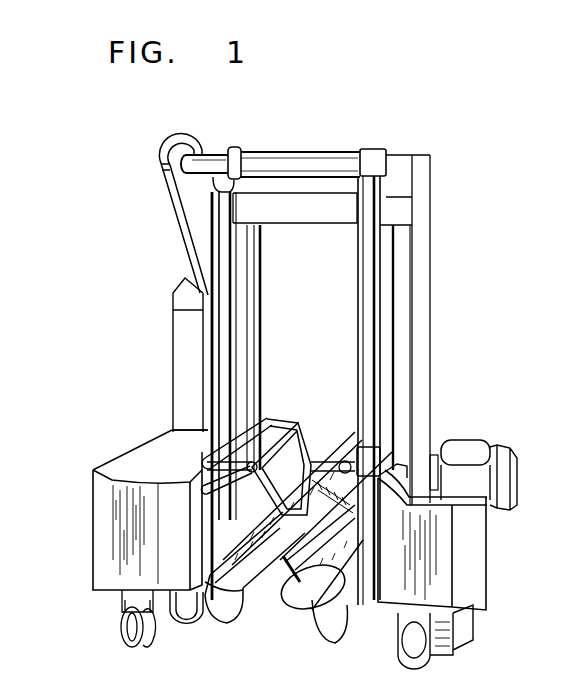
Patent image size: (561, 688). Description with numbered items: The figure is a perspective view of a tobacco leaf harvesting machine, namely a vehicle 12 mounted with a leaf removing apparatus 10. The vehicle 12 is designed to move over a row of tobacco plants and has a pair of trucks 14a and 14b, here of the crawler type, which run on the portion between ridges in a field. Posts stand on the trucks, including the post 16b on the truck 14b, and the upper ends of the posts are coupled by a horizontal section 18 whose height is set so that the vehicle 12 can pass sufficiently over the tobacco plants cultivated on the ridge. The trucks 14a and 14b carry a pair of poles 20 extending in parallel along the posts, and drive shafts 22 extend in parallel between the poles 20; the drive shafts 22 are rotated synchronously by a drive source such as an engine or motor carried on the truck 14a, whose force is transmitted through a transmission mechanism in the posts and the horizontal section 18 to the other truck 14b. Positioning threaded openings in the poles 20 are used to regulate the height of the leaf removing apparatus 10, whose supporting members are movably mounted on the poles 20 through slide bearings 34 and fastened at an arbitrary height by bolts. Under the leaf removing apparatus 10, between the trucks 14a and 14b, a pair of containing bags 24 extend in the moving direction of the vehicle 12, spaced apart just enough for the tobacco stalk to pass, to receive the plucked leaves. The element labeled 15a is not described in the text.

The leaf removing apparatus 10 is at (288, 413).
The vehicle 12 is at (108, 432).
The truck 14a is at (98, 538).
The truck 14b is at (477, 553).
The central guide member 15a is at (232, 307).
The post 16b is at (423, 327).
The horizontal section 18 is at (408, 145).
The poles 20 is at (396, 249).
The drive shafts 22 is at (228, 268).
The containing bags 24 is at (235, 618).
The slide bearings 34 is at (272, 603).